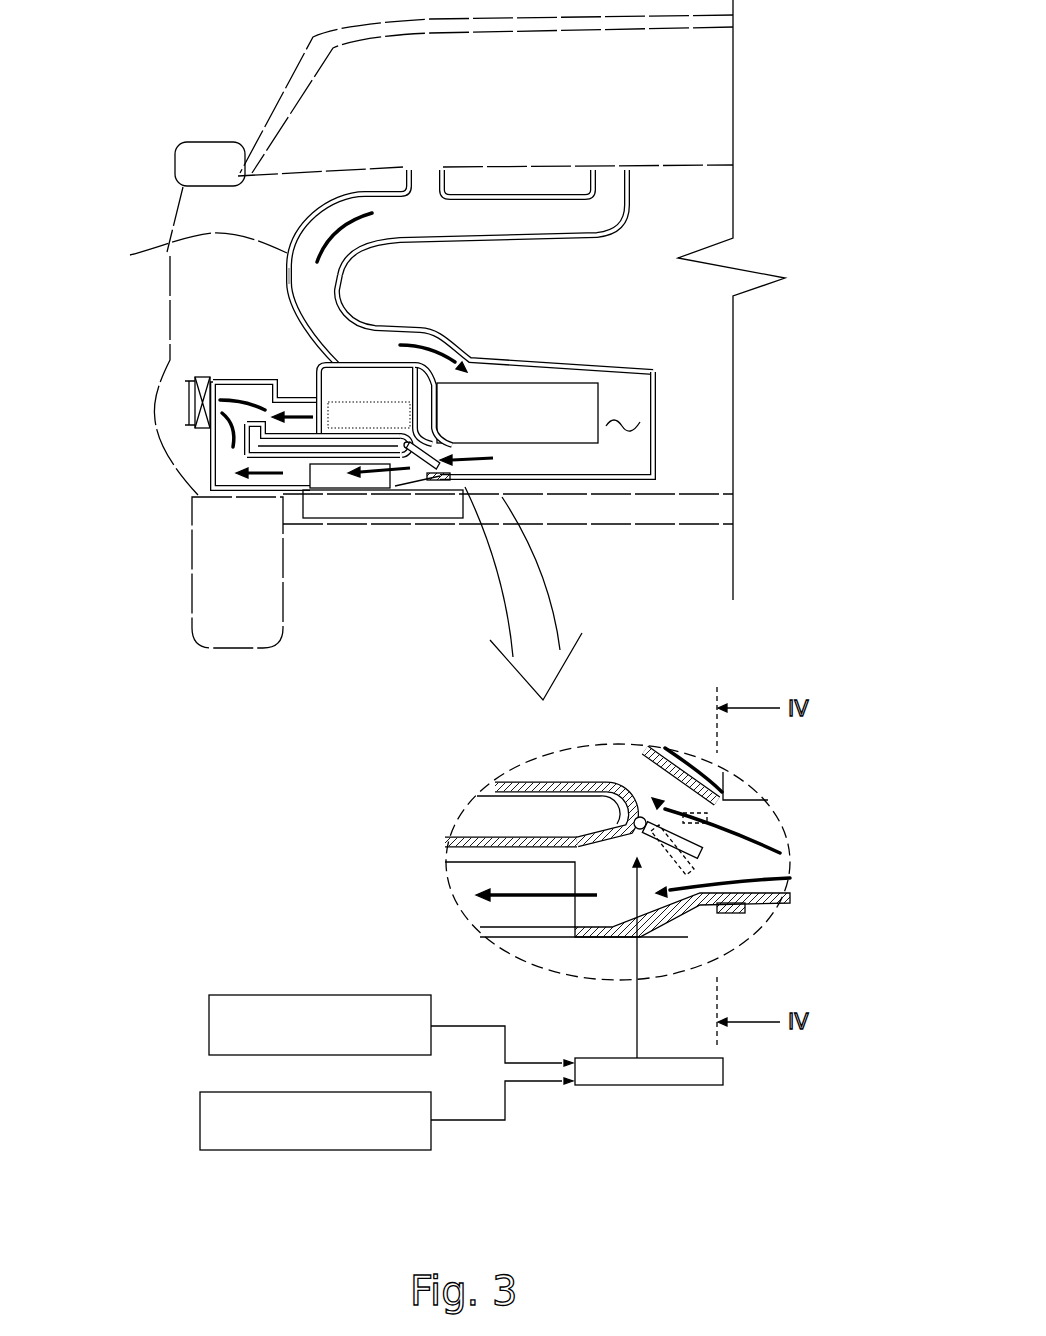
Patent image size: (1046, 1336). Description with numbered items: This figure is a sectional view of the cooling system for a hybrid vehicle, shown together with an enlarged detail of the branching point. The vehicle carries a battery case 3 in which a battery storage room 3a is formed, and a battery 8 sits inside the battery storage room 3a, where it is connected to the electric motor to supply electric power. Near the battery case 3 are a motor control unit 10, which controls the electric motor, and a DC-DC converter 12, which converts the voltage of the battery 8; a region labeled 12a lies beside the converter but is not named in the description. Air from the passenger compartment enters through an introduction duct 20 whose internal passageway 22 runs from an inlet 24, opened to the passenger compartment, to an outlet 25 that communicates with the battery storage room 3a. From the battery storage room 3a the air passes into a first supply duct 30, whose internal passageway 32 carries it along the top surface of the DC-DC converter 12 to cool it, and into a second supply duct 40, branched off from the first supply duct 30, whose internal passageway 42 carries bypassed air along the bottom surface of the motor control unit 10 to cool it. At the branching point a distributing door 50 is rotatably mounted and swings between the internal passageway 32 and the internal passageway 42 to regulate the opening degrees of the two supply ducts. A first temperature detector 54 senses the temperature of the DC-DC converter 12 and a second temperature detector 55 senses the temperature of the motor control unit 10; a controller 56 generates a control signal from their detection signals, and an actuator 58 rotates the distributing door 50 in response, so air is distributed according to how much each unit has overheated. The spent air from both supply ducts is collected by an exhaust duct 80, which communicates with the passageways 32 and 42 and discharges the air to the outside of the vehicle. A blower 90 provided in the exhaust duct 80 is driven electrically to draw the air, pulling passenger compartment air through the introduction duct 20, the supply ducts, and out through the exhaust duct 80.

The battery case 3 is at (653, 436).
The battery storage room 3a is at (617, 430).
The battery 8 is at (580, 428).
The motor control unit 10 is at (332, 376).
The DC-DC converter 12 is at (370, 510).
The outlet passage 12a is at (323, 477).
The introduction duct 20 is at (289, 252).
The internal passageway 22 is at (327, 322).
The inlet 24 is at (616, 170).
The outlet 25 is at (446, 337).
The first supply duct 30 is at (430, 478).
The internal passageway 32 is at (427, 473).
The second supply duct 40 is at (430, 428).
The internal passageway 42 is at (408, 436).
The distributing door 50 is at (440, 448).
The first temperature detector 54 is at (280, 995).
The second temperature detector 55 is at (265, 1094).
The controller 56 is at (637, 1088).
The actuator 58 is at (660, 777).
The exhaust duct 80 is at (195, 420).
The blower 90 is at (203, 432).